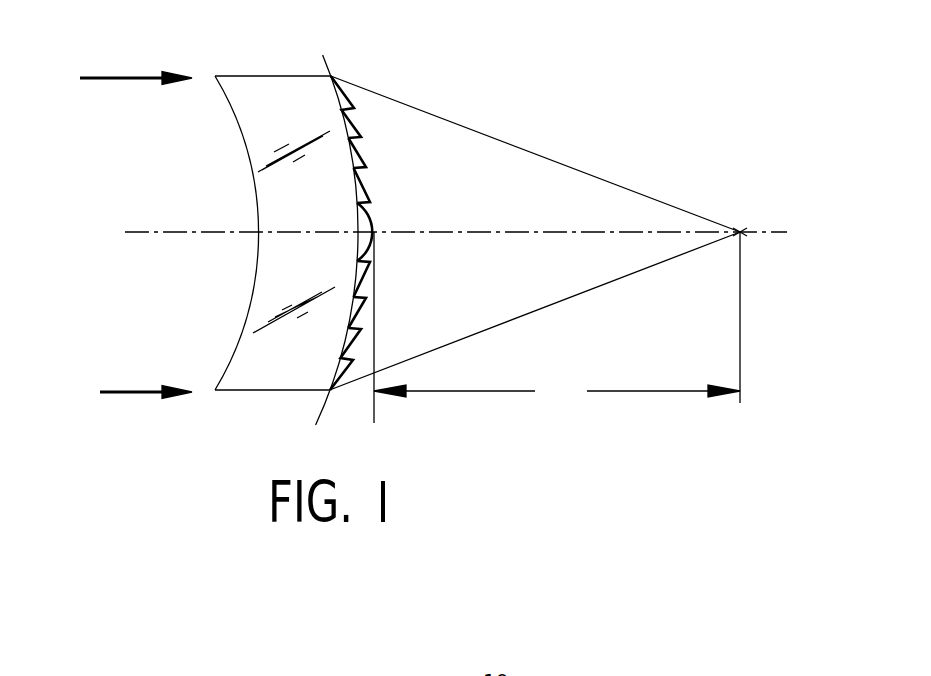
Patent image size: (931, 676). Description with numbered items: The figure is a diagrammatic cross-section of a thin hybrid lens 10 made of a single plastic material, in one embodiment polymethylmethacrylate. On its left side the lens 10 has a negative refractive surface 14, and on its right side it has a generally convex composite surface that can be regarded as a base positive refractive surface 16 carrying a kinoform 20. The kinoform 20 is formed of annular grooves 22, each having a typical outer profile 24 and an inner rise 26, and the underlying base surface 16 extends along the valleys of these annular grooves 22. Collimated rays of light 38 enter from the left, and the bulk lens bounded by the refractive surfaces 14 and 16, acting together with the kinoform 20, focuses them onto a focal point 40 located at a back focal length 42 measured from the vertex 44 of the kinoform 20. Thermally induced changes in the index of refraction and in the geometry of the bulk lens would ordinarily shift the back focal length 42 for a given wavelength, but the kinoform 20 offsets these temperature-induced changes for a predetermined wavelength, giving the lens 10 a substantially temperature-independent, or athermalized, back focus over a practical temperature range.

The hybrid lens 10 is at (350, 68).
The negative refractive surface 14 is at (257, 272).
The base positive refractive surface 16 is at (320, 430).
The kinoform 20 is at (378, 189).
The annular grooves 22 is at (362, 160).
The outer profiles 24 is at (361, 318).
The inner rises 26 is at (361, 294).
The collimated rays of light 38 is at (140, 77).
The focal point 40 is at (744, 216).
The back focal length 42 is at (557, 392).
The vertex of the kinoform 44 is at (368, 230).